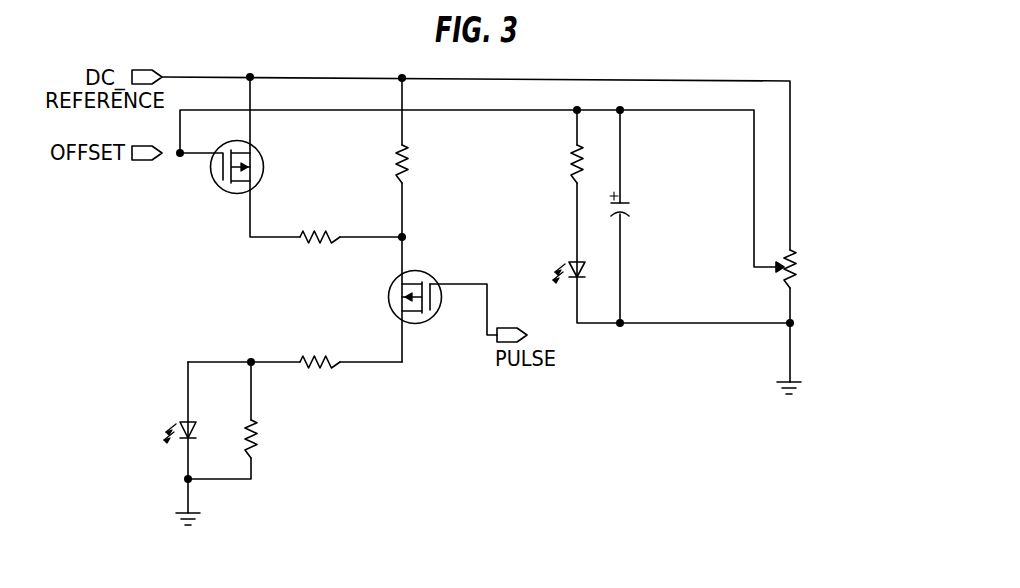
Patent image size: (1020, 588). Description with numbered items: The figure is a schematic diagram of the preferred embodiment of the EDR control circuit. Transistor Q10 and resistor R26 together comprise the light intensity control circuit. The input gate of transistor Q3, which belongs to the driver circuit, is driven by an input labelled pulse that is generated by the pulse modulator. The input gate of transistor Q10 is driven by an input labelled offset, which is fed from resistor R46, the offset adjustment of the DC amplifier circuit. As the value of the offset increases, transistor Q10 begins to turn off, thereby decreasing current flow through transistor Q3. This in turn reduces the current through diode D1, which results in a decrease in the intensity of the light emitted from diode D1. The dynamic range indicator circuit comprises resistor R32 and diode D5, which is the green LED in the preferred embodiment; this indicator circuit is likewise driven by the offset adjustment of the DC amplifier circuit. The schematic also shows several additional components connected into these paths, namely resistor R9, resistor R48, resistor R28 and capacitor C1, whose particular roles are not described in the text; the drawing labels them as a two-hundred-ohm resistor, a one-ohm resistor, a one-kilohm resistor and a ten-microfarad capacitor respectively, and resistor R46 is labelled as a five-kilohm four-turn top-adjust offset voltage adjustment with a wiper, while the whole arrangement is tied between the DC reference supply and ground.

The transistor Q10 is at (265, 168).
The resistor R9, 200 ohm R9 is at (424, 177).
The resistor R26 is at (321, 240).
The transistor Q3 is at (378, 300).
The resistor R48, 1.0 ohm R48 is at (321, 363).
The diode D1 is at (155, 436).
The resistor R28, 1.0K R28 is at (272, 437).
The resistor R32 is at (555, 165).
The diode D5 is at (553, 259).
The capacitor C1, 10uF 10V C1 is at (666, 205).
The resistor R46 is at (832, 287).